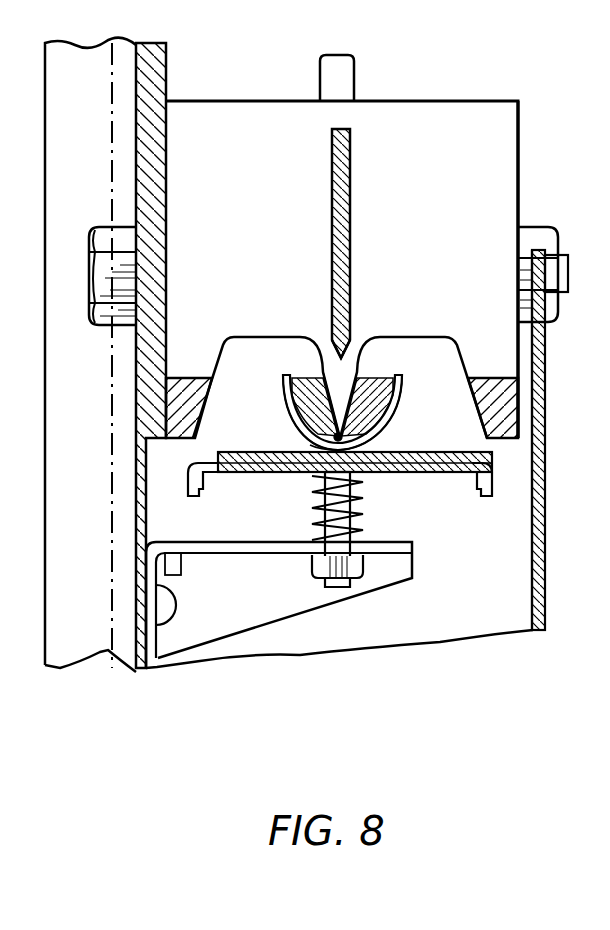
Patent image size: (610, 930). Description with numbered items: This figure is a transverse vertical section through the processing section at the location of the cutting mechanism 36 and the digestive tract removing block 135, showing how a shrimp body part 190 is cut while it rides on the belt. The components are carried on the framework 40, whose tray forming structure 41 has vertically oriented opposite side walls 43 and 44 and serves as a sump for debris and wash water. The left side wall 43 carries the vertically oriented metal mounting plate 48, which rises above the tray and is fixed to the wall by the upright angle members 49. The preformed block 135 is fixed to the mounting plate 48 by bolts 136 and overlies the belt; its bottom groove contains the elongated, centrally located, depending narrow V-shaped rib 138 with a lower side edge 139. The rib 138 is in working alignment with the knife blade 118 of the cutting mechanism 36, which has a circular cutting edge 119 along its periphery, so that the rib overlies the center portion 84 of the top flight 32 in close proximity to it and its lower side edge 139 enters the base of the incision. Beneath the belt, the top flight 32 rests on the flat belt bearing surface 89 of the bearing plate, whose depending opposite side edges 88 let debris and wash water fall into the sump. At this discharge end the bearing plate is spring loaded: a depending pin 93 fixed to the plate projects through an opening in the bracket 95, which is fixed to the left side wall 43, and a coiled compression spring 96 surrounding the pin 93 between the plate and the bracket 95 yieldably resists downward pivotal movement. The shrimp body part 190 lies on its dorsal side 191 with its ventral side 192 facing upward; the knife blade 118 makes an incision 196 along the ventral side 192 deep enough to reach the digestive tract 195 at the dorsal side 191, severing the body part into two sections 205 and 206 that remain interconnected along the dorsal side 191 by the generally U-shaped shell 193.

The top flight 32 is at (216, 455).
The cutting mechanism 36 is at (352, 179).
The framework 40 is at (548, 436).
The tray forming structure 41 is at (548, 466).
The left side wall 43 is at (133, 527).
The right side wall 44 is at (548, 499).
The mounting plate 48 is at (168, 76).
The angle members 49 is at (45, 418).
The center portion 84 is at (318, 482).
The depending opposite side edges 88 is at (190, 490).
The belt bearing surface 89 is at (245, 462).
The depending pin 93 is at (365, 512).
The bracket 95 is at (414, 532).
The coiled compression spring 96 is at (312, 510).
The knife blade 118 is at (342, 246).
The circular cutting edge 119 is at (347, 357).
The block 135 is at (520, 192).
The bolts 136 is at (535, 228).
The V-shaped rib 138 is at (400, 380).
The lower side edge 139 is at (345, 445).
The shrimp body part 190 is at (300, 430).
The dorsal side 191 is at (350, 466).
The ventral side 192 is at (372, 364).
The shell 193 is at (283, 378).
The digestive tract 195 is at (305, 450).
The incision 196 is at (325, 368).
The first section 205 is at (292, 415).
The second section 206 is at (395, 400).